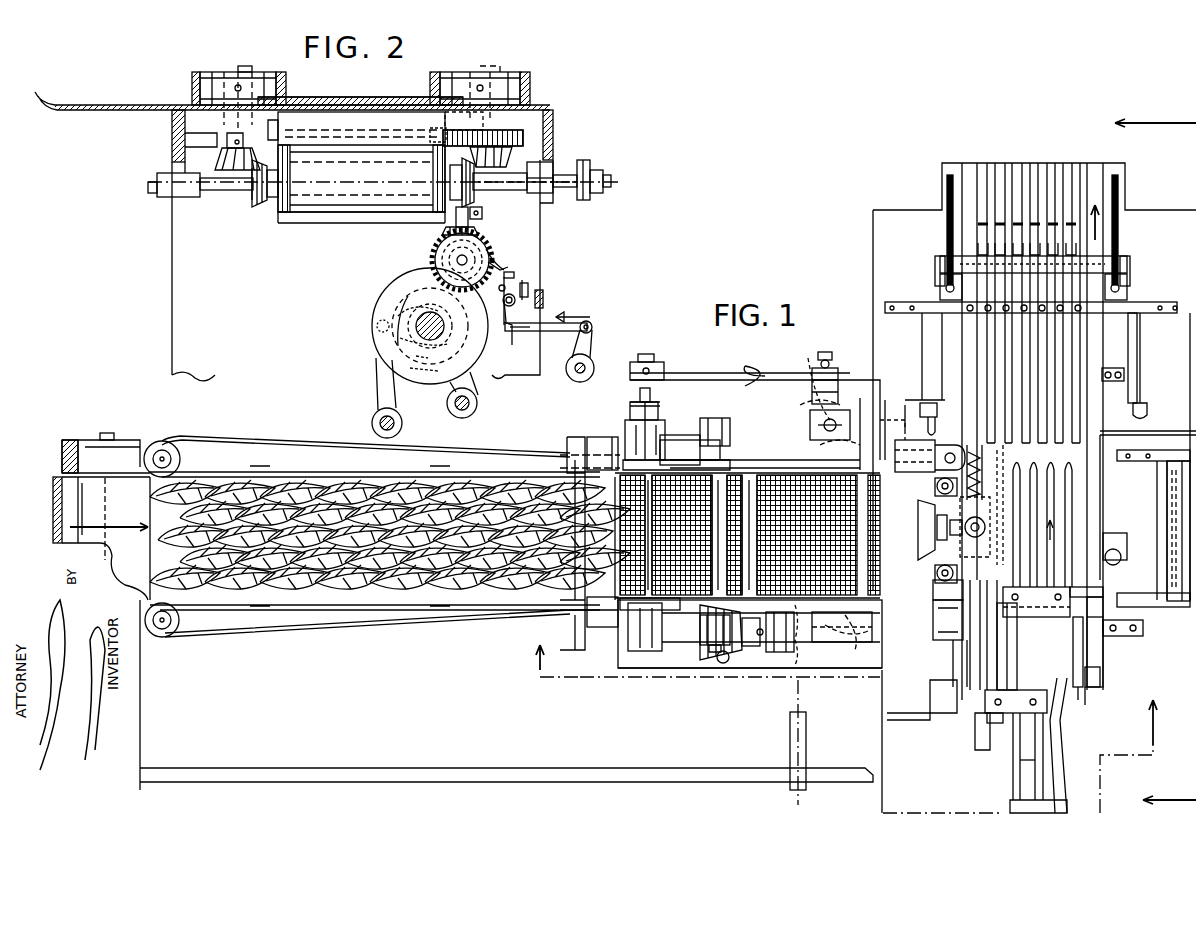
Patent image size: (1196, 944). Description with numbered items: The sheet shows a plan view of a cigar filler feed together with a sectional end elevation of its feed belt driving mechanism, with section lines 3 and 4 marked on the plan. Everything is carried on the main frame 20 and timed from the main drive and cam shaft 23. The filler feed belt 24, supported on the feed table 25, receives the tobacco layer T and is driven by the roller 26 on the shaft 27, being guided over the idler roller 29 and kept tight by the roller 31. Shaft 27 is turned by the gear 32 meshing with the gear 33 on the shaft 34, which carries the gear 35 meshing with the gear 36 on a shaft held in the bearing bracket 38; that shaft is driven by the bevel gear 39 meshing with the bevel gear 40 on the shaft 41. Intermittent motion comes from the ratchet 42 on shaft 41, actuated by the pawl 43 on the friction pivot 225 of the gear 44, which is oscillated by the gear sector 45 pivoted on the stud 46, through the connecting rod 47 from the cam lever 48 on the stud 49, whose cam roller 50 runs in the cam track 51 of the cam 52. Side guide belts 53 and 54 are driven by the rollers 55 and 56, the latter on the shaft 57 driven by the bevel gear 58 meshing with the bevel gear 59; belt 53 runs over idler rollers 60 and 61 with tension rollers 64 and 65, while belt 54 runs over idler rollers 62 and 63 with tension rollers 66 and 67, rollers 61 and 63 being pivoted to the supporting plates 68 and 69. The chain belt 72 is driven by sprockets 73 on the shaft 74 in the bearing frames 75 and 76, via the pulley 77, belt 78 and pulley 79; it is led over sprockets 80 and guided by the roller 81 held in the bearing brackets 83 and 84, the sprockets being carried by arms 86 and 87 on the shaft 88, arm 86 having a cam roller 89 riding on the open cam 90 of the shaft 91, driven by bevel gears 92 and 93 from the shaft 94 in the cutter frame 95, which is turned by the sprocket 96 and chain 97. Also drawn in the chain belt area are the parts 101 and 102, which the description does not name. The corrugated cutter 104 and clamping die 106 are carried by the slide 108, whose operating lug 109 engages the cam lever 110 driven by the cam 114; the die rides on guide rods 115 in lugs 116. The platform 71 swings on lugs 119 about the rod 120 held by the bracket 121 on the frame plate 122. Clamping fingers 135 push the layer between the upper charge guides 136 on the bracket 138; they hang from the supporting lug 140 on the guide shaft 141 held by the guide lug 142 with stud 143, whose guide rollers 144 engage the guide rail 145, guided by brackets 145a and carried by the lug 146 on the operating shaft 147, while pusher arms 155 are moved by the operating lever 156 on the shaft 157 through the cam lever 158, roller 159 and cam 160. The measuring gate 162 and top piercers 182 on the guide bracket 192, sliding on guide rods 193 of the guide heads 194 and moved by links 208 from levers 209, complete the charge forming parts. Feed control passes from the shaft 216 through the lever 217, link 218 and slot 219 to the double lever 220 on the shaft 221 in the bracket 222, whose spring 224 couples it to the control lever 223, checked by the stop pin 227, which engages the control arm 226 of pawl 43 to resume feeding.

In FIG. 2, the main frame 20 is at (172, 130).
In FIG. 2, the main drive and cam shaft 23 is at (428, 300).
In FIG. 2, the filler feed belt 24 is at (345, 100).
In FIG. 1, the filler feed belt 24 is at (53, 505).
In FIG. 2, the feed table 25 is at (108, 104).
In FIG. 1, the feed table 25 is at (302, 438).
In FIG. 2, the roller 26 is at (272, 218).
In FIG. 2, the shaft 27 is at (222, 190).
In FIG. 1, the shaft 27 is at (836, 368).
In FIG. 1, the idler roller 29 is at (62, 460).
In FIG. 2, the roller 31 is at (288, 128).
In FIG. 2, the gear 32 is at (476, 198).
In FIG. 2, the gear 33 is at (512, 158).
In FIG. 2, the shaft 34 is at (498, 68).
In FIG. 1, the shaft 34 is at (808, 380).
In FIG. 2, the gear 35 is at (522, 130).
In FIG. 2, the gear 36 is at (430, 136).
In FIG. 2, the bearing bracket 38 is at (545, 195).
In FIG. 2, the bevel gear 39 is at (442, 230).
In FIG. 2, the bevel gear 40 is at (448, 220).
In FIG. 2, the shaft 41 is at (456, 260).
In FIG. 2, the ratchet 42 is at (442, 264).
In FIG. 2, the pawl 43 is at (478, 245).
In FIG. 2, the gear 44 is at (434, 250).
In FIG. 2, the gear sector 45 is at (396, 300).
In FIG. 2, the stud 46 is at (477, 406).
In FIG. 2, the connecting rod 47 is at (438, 362).
In FIG. 2, the cam lever 48 is at (376, 388).
In FIG. 2, the stud 49 is at (402, 425).
In FIG. 2, the cam roller 50 is at (376, 338).
In FIG. 2, the cam track 51 is at (380, 316).
In FIG. 2, the cam 52 is at (396, 304).
In FIG. 2, the side guide belt 53 is at (432, 82).
In FIG. 1, the side guide belt 53 is at (222, 440).
In FIG. 2, the side guide belt 54 is at (192, 82).
In FIG. 1, the side guide belt 54 is at (232, 630).
In FIG. 2, the roller 55 is at (478, 72).
In FIG. 1, the roller 55 is at (830, 422).
In FIG. 2, the roller 56 is at (232, 72).
In FIG. 1, the roller 56 is at (840, 650).
In FIG. 2, the shaft 57 is at (258, 64).
In FIG. 1, the shaft 57 is at (830, 645).
In FIG. 2, the bevel gear 58 is at (220, 160).
In FIG. 2, the bevel gear 59 is at (255, 198).
In FIG. 1, the idler roller 60 is at (164, 440).
In FIG. 1, the idler roller 61 is at (942, 446).
In FIG. 1, the idler roller 62 is at (164, 638).
In FIG. 1, the idler roller 63 is at (933, 636).
In FIG. 1, the tension roller 64 is at (805, 470).
In FIG. 1, the tension roller 65 is at (890, 420).
In FIG. 1, the tension roller 66 is at (786, 652).
In FIG. 1, the tension roller 67 is at (933, 605).
In FIG. 1, the supporting plate 68 is at (788, 400).
In FIG. 1, the supporting plate 69 is at (765, 660).
In FIG. 1, the platform 71 is at (1178, 450).
In FIG. 1, the chain belt 72 is at (590, 445).
In FIG. 1, the sprocket 73 is at (608, 460).
In FIG. 1, the shaft 74 is at (640, 396).
In FIG. 1, the bearing frame 75 is at (628, 435).
In FIG. 1, the bearing frame 76 is at (628, 635).
In FIG. 2, the pulley 77 is at (604, 172).
In FIG. 1, the pulley 77 is at (636, 364).
In FIG. 2, the belt 78 is at (584, 160).
In FIG. 1, the belt 78 is at (700, 370).
In FIG. 1, the pulley 79 is at (838, 370).
In FIG. 1, the sprocket 80 is at (895, 672).
In FIG. 1, the roller 81 is at (915, 449).
In FIG. 1, the bearing bracket 83 is at (866, 430).
In FIG. 1, the bearing bracket 84 is at (858, 660).
In FIG. 1, the arm 86 is at (692, 435).
In FIG. 1, the arm 87 is at (690, 605).
In FIG. 1, the shaft 88 is at (590, 628).
In FIG. 1, the cam roller 89 is at (776, 455).
In FIG. 1, the open cam 90 is at (688, 440).
In FIG. 1, the shaft 91 is at (716, 418).
In FIG. 1, the bevel gear 92 is at (704, 605).
In FIG. 1, the bevel gear 93 is at (742, 655).
In FIG. 1, the shaft 94 is at (958, 640).
In FIG. 1, the cutter frame 95 is at (908, 400).
In FIG. 1, the sprocket 96 is at (805, 640).
In FIG. 1, the chain 97 is at (798, 790).
In FIG. 1, the brush bar 101 is at (750, 490).
In FIG. 1, the brush bar 102 is at (705, 500).
In FIG. 1, the corrugated cutter 104 is at (982, 458).
In FIG. 1, the clamping die 106 is at (1005, 466).
In FIG. 1, the slide 108 is at (920, 520).
In FIG. 1, the operating lug 109 is at (938, 528).
In FIG. 1, the cam lever 110 is at (958, 690).
In FIG. 1, the cam 114 is at (980, 690).
In FIG. 1, the guide rod 115 is at (937, 486).
In FIG. 1, the lug 116 is at (935, 492).
In FIG. 1, the lug 119 is at (1157, 470).
In FIG. 1, the rod 120 is at (1167, 505).
In FIG. 1, the bracket 121 is at (1182, 518).
In FIG. 1, the frame plate 122 is at (873, 292).
In FIG. 1, the clamping finger 135 is at (1072, 488).
In FIG. 1, the upper charge guide 136 is at (1042, 163).
In FIG. 1, the bracket 138 is at (905, 315).
In FIG. 1, the supporting lug 140 is at (1040, 617).
In FIG. 1, the guide shaft 141 is at (1103, 590).
In FIG. 1, the guide lug 142 is at (1082, 690).
In FIG. 1, the stud 143 is at (1100, 677).
In FIG. 1, the guide roller 144 is at (1100, 672).
In FIG. 1, the guide rail 145 is at (1102, 432).
In FIG. 1, the bracket 145a is at (1125, 370).
In FIG. 1, the lug 146 is at (1122, 540).
In FIG. 1, the operating shaft 147 is at (1121, 556).
In FIG. 1, the pusher arm 155 is at (1066, 738).
In FIG. 1, the operating lever 156 is at (1045, 772).
In FIG. 1, the shaft 157 is at (1052, 690).
In FIG. 1, the cam lever 158 is at (1000, 725).
In FIG. 1, the roller 159 is at (1000, 713).
In FIG. 1, the cam 160 is at (1010, 666).
In FIG. 1, the measuring gate 162 is at (976, 226).
In FIG. 1, the top piercer 182 is at (976, 248).
In FIG. 1, the guide bracket 192 is at (1095, 262).
In FIG. 1, the guide rod 193 is at (947, 188).
In FIG. 1, the guide head 194 is at (940, 290).
In FIG. 1, the link 208 is at (935, 352).
In FIG. 1, the lever 209 is at (928, 400).
In FIG. 2, the shaft 216 is at (568, 372).
In FIG. 2, the lever 217 is at (593, 328).
In FIG. 2, the link 218 is at (572, 332).
In FIG. 2, the slot 219 is at (528, 345).
In FIG. 2, the double lever 220 is at (516, 298).
In FIG. 2, the shaft 221 is at (543, 299).
In FIG. 2, the bracket 222 is at (580, 315).
In FIG. 2, the control lever 223 is at (514, 275).
In FIG. 2, the spring 224 is at (528, 285).
In FIG. 2, the friction pivot 225 is at (504, 264).
In FIG. 2, the control arm 226 is at (496, 266).
In FIG. 2, the stop pin 227 is at (504, 286).
In FIG. 2, the tobacco layer T is at (372, 97).
In FIG. 1, the tobacco layer T is at (150, 523).
In FIG. 1, the section line 3— 3 is at (1143, 457).
In FIG. 1, the section line 4— 4 is at (845, 717).